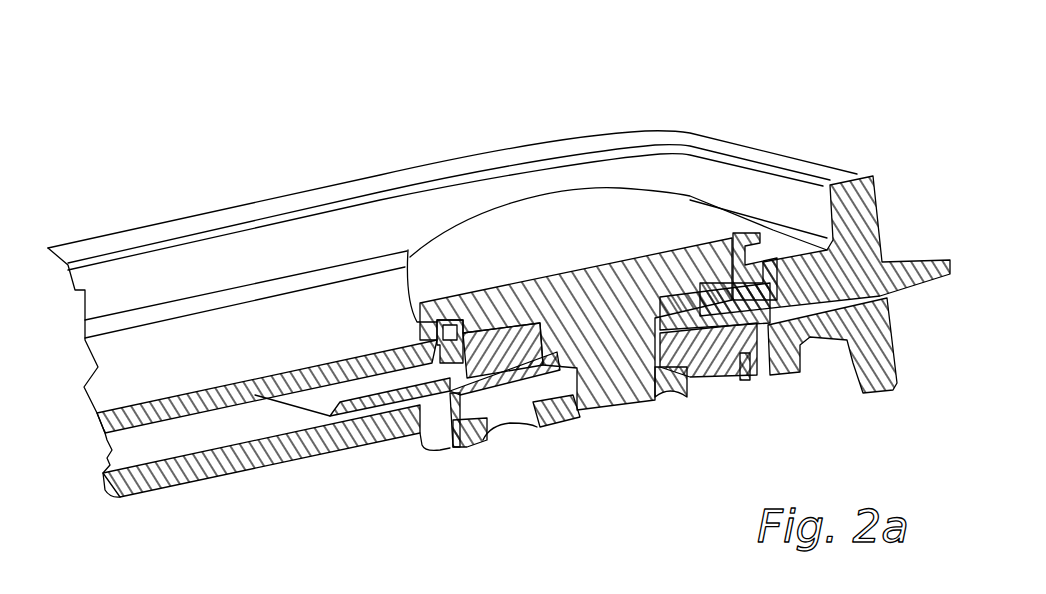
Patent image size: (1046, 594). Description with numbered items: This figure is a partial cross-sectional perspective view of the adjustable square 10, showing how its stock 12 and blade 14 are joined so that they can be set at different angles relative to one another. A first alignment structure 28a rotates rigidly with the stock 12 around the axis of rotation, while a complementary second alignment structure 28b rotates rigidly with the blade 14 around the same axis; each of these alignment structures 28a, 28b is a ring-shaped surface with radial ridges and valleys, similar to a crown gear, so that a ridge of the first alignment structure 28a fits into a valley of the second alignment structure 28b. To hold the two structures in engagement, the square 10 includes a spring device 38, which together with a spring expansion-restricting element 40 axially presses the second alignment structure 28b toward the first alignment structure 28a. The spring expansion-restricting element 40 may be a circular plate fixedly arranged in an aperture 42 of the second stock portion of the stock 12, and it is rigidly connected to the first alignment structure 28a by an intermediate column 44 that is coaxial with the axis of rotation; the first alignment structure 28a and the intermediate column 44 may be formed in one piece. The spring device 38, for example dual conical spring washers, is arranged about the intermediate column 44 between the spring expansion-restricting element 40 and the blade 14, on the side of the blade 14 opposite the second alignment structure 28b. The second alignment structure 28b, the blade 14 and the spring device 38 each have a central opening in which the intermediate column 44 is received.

The square 10 is at (767, 97).
The stock 12 is at (222, 242).
The blade 14 is at (906, 257).
The first alignment structure 28a is at (700, 257).
The second alignment structure 28b is at (720, 303).
The spring device 38 is at (750, 383).
The spring expansion-restricting element 40 is at (670, 393).
The aperture 42 is at (463, 450).
The intermediate column 44 is at (600, 367).